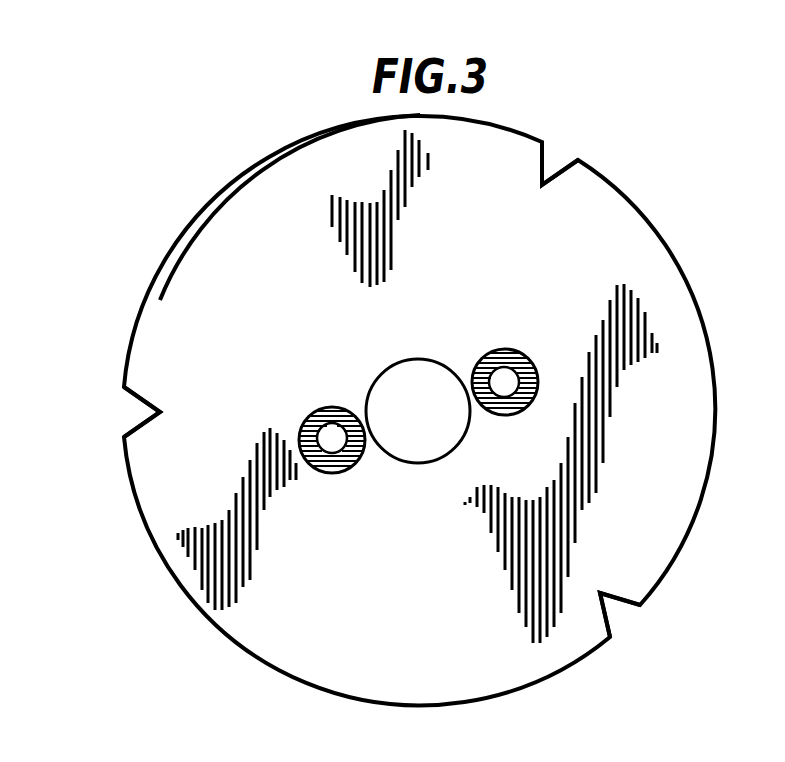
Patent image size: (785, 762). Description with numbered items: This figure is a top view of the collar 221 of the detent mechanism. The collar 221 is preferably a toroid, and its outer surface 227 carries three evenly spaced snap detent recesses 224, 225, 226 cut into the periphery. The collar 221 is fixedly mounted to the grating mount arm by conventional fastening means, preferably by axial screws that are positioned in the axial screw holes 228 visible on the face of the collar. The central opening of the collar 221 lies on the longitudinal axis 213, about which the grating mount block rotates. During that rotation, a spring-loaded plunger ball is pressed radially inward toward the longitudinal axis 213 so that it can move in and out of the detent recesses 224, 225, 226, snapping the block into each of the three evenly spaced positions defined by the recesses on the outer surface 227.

The collar 221 is at (638, 262).
The longitudinal axis 213 is at (420, 403).
The snap detent recess 224 is at (561, 168).
The snap detent recess 225 is at (625, 607).
The snap detent recess 226 is at (137, 426).
The outer surface 227 is at (246, 172).
The axial screw hole 228 is at (330, 428).